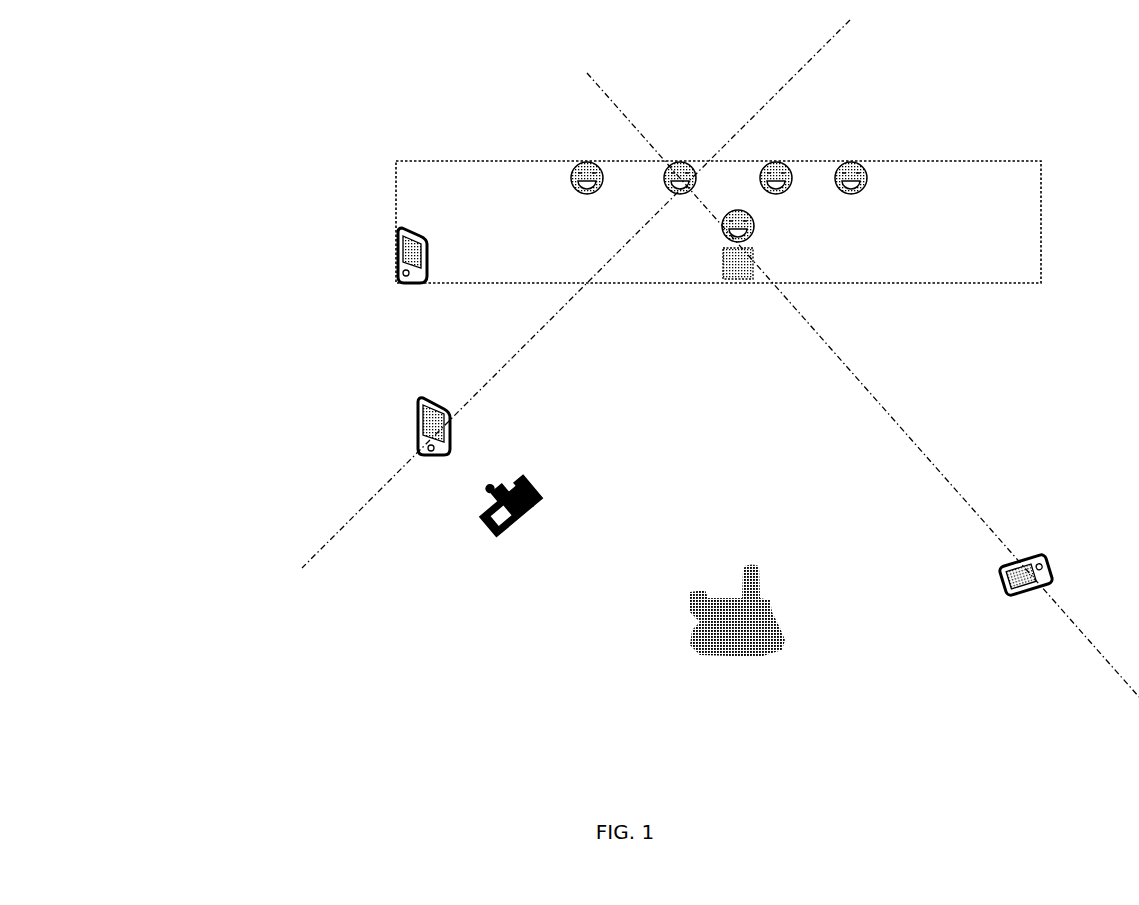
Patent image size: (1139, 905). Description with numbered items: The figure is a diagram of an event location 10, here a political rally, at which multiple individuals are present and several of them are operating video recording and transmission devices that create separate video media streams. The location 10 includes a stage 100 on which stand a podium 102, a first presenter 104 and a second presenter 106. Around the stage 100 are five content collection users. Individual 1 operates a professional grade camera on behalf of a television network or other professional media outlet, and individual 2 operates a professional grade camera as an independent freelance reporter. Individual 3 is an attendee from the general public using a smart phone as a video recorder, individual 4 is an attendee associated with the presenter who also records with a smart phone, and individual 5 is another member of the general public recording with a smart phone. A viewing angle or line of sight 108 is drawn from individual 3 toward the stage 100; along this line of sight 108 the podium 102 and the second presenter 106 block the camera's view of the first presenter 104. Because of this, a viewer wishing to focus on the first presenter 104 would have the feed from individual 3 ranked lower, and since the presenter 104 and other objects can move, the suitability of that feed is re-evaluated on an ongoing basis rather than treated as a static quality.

The event location 10 is at (166, 150).
The stage 100 is at (425, 162).
The podium 102 is at (720, 282).
The first presenter 104 is at (667, 160).
The second presenter 106 is at (752, 235).
The viewing angle/line of sight 108 is at (897, 427).
The individual 1 is at (730, 658).
The individual 2 is at (490, 528).
The individual 3 is at (1003, 598).
The individual 4 is at (393, 283).
The individual 5 is at (437, 455).